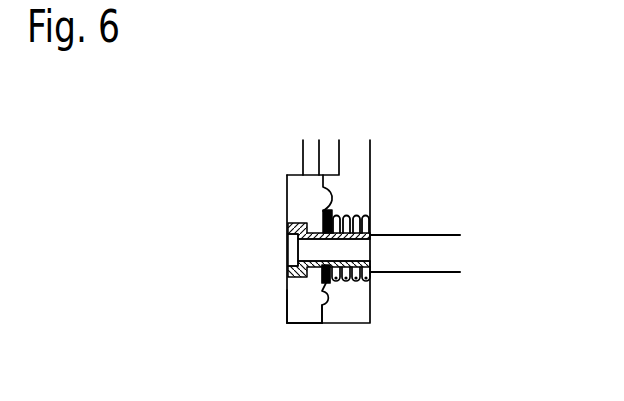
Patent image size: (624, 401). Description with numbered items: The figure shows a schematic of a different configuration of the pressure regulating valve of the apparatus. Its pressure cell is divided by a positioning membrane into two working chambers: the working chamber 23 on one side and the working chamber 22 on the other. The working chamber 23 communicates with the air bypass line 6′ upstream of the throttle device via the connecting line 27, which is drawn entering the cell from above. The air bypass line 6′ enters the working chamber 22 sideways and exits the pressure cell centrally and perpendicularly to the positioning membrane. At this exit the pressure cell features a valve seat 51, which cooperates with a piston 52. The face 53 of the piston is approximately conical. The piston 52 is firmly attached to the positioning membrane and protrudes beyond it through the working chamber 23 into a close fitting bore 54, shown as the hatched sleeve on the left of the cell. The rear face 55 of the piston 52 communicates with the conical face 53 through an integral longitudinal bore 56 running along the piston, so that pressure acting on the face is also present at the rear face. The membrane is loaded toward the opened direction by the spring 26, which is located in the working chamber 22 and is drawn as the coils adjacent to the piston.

The connecting line 27 is at (308, 174).
The air bypass line 6′ is at (350, 175).
The piston 52 is at (322, 224).
The spring 26 is at (364, 215).
The rear face 55 is at (287, 238).
The close fitting bore 54 is at (288, 264).
The face 53 is at (346, 245).
The valve seat 51 is at (373, 237).
The longitudinal bore 56 is at (372, 258).
The working chamber 22 is at (350, 298).
The working chamber 23 is at (305, 291).